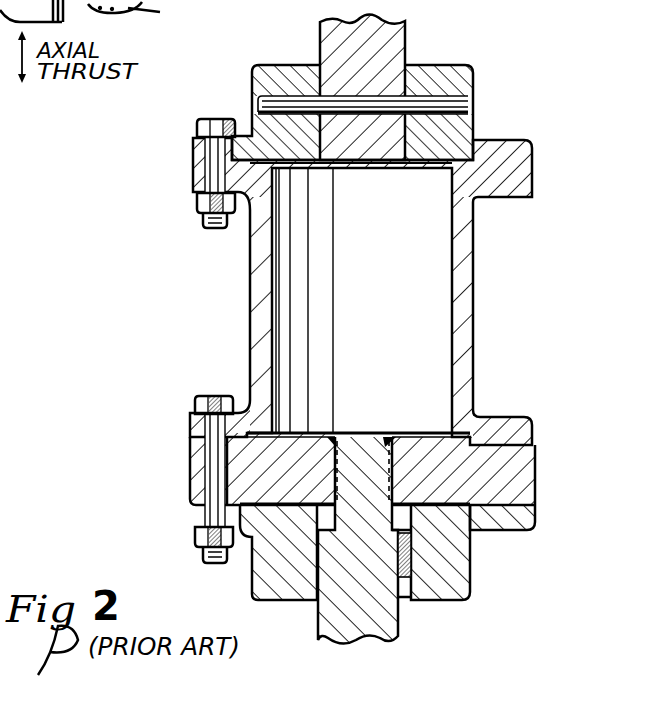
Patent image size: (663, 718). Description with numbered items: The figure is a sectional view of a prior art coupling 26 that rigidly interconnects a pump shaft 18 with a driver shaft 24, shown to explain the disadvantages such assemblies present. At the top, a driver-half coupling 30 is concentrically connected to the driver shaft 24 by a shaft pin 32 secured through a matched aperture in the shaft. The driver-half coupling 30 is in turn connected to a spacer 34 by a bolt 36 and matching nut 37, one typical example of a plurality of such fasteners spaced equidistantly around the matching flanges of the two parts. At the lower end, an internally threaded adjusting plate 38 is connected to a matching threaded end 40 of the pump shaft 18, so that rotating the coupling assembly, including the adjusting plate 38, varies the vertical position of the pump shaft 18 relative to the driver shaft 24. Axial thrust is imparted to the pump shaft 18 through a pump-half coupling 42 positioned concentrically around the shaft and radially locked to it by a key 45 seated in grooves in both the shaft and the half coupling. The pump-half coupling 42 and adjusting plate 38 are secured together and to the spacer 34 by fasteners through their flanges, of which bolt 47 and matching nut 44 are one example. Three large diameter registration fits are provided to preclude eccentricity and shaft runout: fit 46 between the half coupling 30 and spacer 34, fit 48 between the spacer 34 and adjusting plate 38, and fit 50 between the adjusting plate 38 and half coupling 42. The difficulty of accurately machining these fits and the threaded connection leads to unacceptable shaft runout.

The pump shaft 18 is at (401, 640).
The driver shaft 24 is at (408, 50).
The prior art coupling 26 is at (535, 228).
The driver-half coupling 30 is at (460, 66).
The shaft pin 32 is at (458, 100).
The spacer 34 is at (474, 318).
The bolt 36 is at (214, 121).
The matching nut 37 is at (201, 212).
The adjusting plate 38 is at (537, 482).
The threaded end 40 is at (398, 437).
The pump-half coupling 42 is at (471, 583).
The matching nut 44 is at (198, 538).
The key 45 is at (415, 578).
The fit 46 is at (477, 165).
The bolt 47 is at (196, 405).
The fit 48 is at (480, 432).
The fit 50 is at (480, 508).